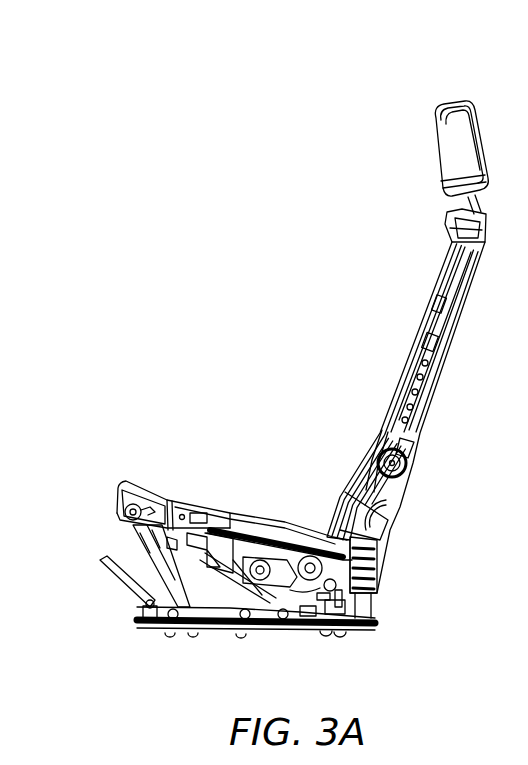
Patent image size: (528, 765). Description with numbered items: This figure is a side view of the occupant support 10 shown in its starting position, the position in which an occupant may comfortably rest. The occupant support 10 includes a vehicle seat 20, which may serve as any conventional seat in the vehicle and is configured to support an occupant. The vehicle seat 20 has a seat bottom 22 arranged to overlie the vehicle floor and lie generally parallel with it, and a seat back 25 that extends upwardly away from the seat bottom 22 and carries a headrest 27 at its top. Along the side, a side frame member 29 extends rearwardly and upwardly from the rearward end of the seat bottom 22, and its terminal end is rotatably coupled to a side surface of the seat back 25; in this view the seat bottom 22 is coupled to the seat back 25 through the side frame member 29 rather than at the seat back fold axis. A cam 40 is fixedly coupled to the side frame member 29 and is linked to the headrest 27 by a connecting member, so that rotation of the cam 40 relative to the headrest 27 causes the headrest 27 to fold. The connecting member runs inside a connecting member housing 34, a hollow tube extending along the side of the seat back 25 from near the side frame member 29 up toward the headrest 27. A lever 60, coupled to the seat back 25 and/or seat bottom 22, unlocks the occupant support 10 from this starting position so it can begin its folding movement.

The occupant support 10 is at (204, 155).
The vehicle seat 20 is at (341, 257).
The seat bottom 22 is at (136, 468).
The seat back 25 is at (400, 337).
The headrest 27 is at (436, 98).
The side frame member 29 is at (345, 489).
The connecting member housing 34 is at (430, 417).
The cam 40 is at (370, 431).
The lever 60 is at (363, 587).